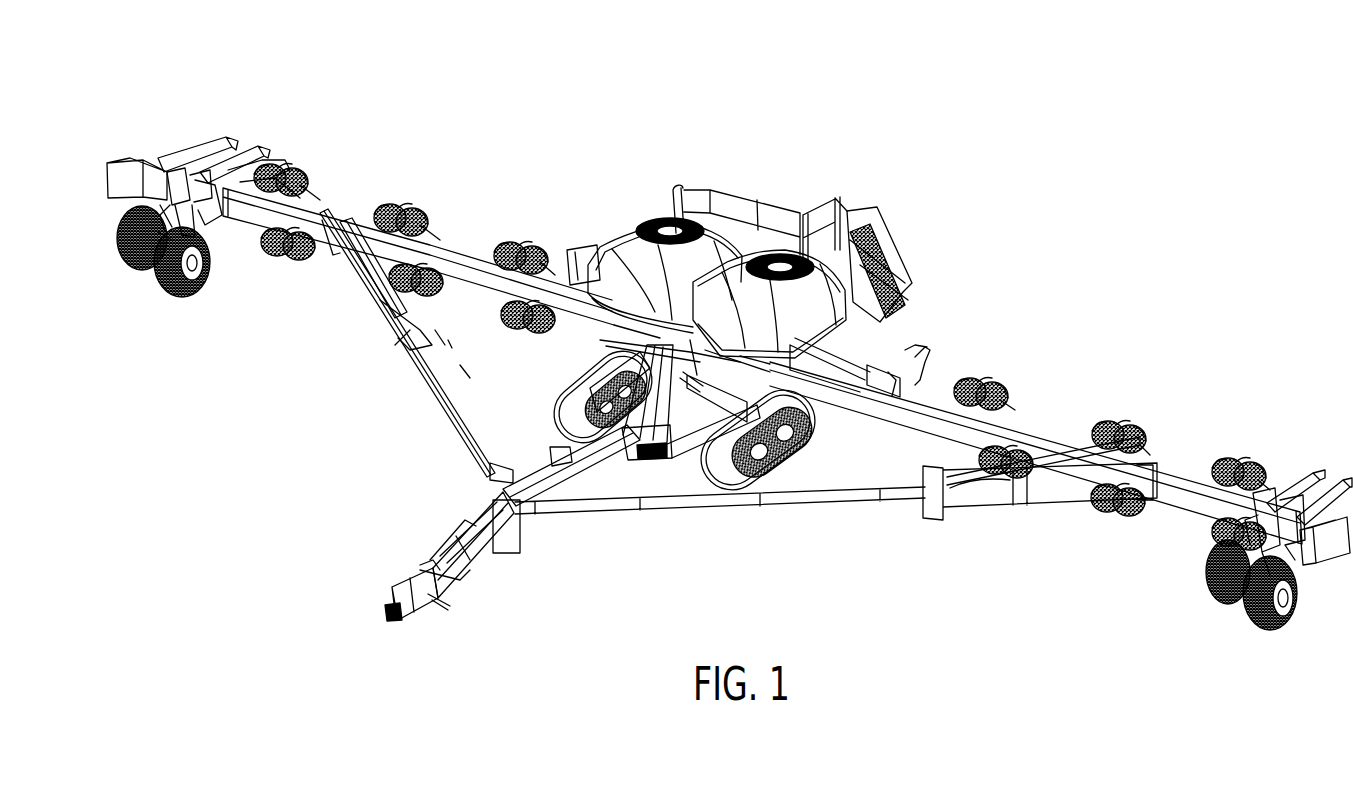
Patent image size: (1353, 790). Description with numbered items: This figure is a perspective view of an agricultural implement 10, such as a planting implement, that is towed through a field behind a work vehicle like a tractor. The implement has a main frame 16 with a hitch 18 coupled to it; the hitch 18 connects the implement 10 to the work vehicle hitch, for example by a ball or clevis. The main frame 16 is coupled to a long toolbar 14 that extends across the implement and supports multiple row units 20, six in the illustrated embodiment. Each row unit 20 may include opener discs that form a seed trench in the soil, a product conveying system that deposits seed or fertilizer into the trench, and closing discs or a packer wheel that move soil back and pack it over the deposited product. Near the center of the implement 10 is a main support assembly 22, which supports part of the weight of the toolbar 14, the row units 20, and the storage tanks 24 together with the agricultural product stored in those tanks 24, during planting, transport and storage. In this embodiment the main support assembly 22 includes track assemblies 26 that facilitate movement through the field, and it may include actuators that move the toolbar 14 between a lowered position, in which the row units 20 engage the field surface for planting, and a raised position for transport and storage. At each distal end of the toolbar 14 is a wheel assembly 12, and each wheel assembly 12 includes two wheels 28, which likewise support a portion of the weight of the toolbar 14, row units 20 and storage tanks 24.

The agricultural implement 10 is at (398, 70).
The wheel assembly 12 is at (228, 256).
The toolbar 14 is at (1060, 443).
The main frame 16 is at (573, 450).
The hitch 18 is at (427, 593).
The row unit 20 is at (313, 193).
The main support assembly 22 is at (662, 466).
The storage tank 24 is at (630, 233).
The track assembly 26 is at (590, 394).
The wheel 28 is at (167, 293).